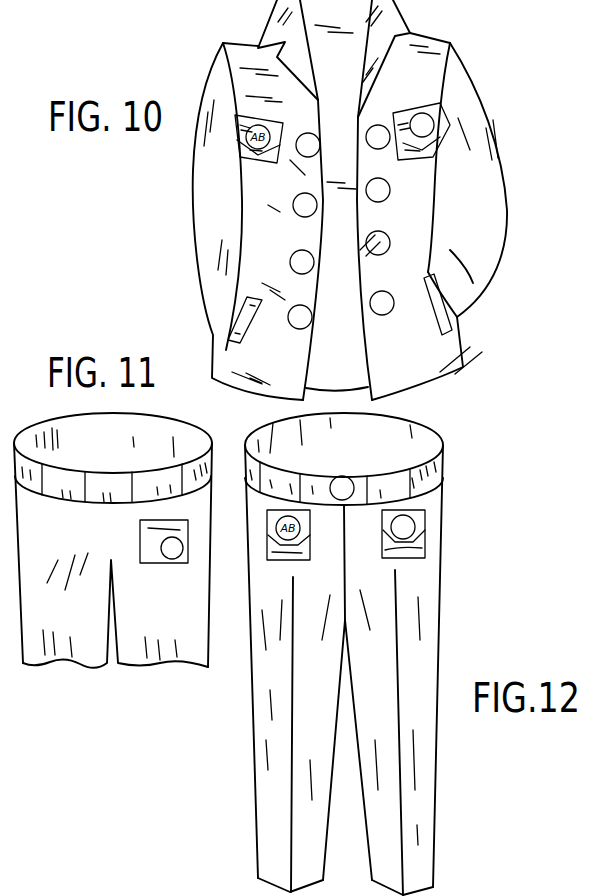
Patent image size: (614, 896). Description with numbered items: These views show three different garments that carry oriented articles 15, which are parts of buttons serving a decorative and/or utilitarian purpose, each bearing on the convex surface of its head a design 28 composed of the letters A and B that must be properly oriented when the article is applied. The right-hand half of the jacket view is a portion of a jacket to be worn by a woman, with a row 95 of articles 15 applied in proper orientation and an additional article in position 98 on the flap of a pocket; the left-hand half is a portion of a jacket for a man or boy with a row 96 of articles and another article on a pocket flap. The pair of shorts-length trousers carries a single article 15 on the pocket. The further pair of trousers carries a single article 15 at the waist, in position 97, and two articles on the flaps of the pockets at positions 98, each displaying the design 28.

In FIG. 10, the article 15 is at (384, 297).
In FIG. 11, the article 15 is at (173, 559).
In FIG. 12, the article 15 is at (352, 477).
In FIG. 12, the design 28 is at (415, 518).
In FIG. 10, the row of articles 95 is at (395, 244).
In FIG. 10, the row of articles 96 is at (300, 342).
In FIG. 12, the position at the waist 97 is at (363, 466).
In FIG. 10, the position on pocket flap 98 is at (441, 101).
In FIG. 12, the position on pocket flap 98 is at (447, 548).